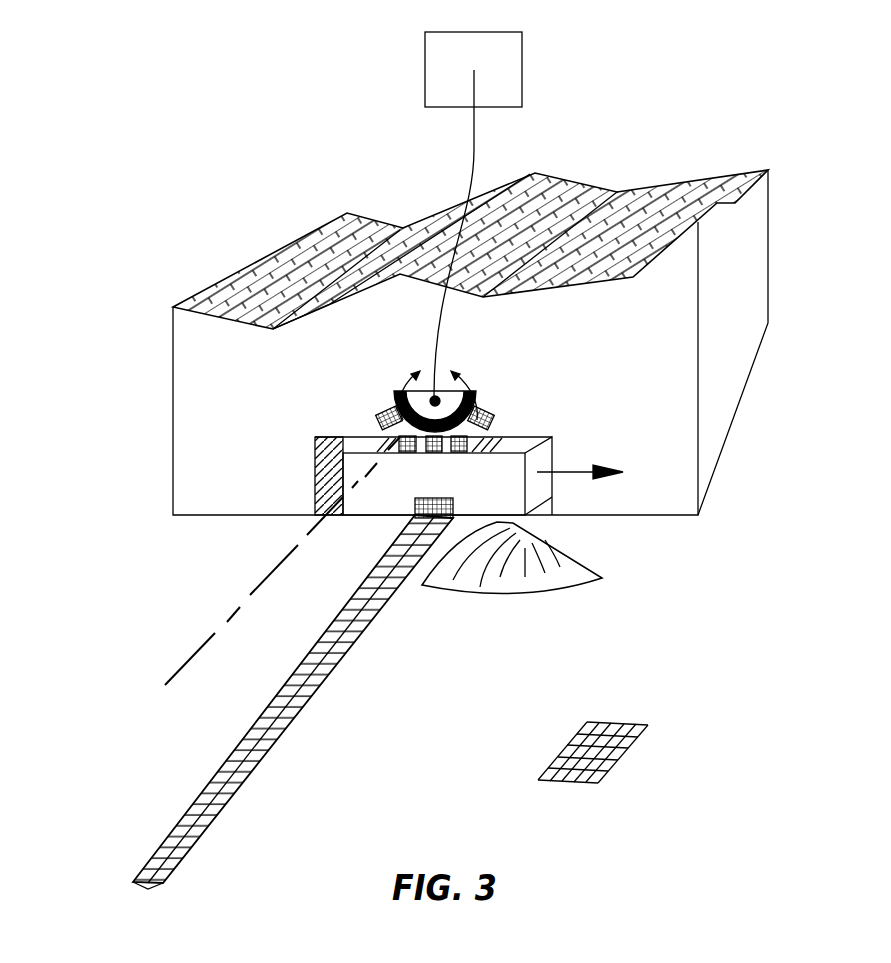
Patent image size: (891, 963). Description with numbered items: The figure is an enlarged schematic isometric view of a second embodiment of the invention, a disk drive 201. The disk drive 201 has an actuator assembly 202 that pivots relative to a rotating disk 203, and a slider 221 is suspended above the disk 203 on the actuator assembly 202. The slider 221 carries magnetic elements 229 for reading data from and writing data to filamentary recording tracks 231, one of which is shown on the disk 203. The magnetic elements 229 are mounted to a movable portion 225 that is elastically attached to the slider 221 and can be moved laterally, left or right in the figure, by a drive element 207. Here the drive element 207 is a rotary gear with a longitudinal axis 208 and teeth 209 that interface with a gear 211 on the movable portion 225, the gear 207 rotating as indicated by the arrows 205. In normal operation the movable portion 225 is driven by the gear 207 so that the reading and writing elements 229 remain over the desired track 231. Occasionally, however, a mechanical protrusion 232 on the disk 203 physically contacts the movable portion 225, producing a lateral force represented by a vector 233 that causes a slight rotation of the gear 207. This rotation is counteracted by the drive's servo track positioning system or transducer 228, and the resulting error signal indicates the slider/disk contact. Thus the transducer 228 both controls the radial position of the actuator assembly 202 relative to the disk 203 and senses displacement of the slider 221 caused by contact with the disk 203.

The disk drive 201 is at (738, 117).
The actuator assembly 202 is at (798, 292).
The rotating disk 203 is at (620, 762).
The arrows 205 is at (413, 373).
The drive element 207 is at (400, 402).
The longitudinal axis 208 is at (187, 660).
The teeth 209 is at (378, 420).
The gear 211 is at (477, 450).
The slider 221 is at (763, 237).
The movable portion 225 is at (310, 533).
The transducer 228 is at (428, 53).
The magnetic elements 229 is at (418, 506).
The filamentary recording track 231 is at (273, 745).
The mechanical protrusion 232 is at (572, 572).
The vector 233 is at (580, 467).